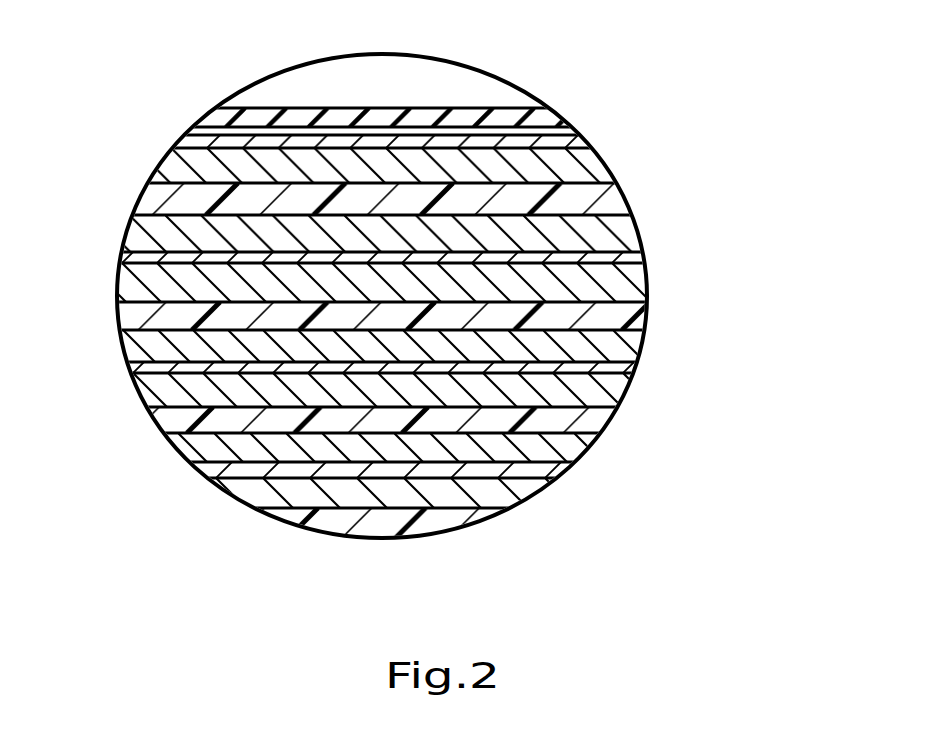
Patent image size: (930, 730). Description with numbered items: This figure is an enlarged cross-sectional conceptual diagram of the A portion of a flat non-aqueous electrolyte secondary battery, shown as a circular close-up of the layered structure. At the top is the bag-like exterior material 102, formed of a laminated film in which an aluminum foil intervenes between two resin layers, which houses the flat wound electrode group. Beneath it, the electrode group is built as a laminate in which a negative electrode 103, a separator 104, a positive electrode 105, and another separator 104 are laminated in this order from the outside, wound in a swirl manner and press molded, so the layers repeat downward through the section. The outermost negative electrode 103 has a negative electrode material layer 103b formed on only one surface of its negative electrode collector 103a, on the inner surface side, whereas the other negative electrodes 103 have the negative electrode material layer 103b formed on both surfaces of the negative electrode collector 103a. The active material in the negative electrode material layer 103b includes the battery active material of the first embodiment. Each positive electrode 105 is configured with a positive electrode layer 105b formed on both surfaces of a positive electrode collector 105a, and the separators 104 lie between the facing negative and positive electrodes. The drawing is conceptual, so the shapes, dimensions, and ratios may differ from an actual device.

The A portion A is at (258, 92).
The bag-like exterior material 102 is at (557, 112).
The negative electrode 103 is at (495, 271).
The negative electrode collector 103a is at (587, 143).
The negative electrode material layer 103b is at (583, 168).
The separator 104 is at (142, 197).
The positive electrode 105 is at (494, 385).
The positive electrode collector 105a is at (637, 257).
The positive electrode layer 105b is at (620, 222).